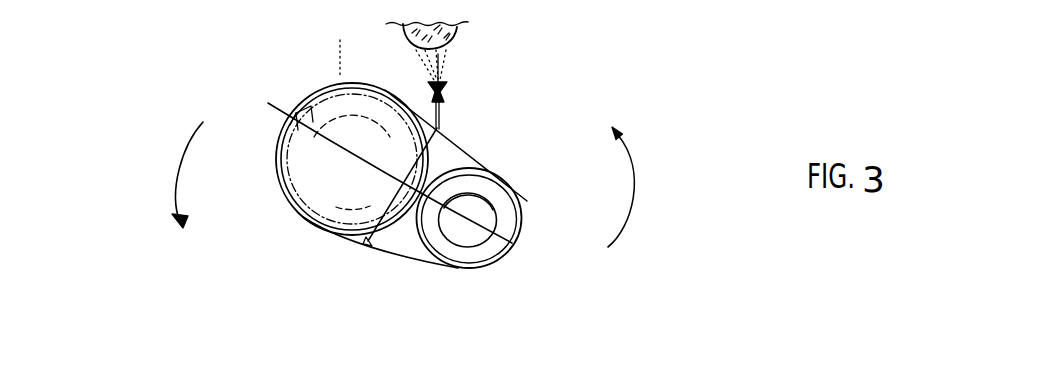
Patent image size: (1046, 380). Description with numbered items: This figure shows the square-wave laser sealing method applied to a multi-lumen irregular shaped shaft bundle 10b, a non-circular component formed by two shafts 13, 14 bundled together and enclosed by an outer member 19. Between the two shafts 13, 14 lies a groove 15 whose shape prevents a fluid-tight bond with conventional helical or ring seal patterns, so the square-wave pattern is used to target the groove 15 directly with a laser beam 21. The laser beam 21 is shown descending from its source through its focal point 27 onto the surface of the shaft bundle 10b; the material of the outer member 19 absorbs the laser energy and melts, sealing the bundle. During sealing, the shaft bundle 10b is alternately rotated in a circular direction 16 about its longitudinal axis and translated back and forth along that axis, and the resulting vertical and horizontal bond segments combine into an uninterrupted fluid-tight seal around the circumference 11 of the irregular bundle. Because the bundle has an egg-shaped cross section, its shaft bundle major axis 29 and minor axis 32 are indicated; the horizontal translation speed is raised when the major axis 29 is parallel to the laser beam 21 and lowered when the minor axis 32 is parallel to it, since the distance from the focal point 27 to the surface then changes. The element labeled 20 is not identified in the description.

The multi-lumen irregular shaped shaft bundle 10b is at (298, 235).
The circumference 11 is at (389, 50).
The shaft 13 is at (379, 168).
The shaft 14 is at (512, 216).
The groove 15 is at (470, 164).
The circular direction 16 is at (404, 184).
The outer member 19 is at (395, 257).
The liquid supply reservoir 20 is at (457, 31).
The laser beam 21 is at (445, 73).
The focal point of the laser beam 27 is at (450, 96).
The shaft bundle major axis 29 is at (311, 101).
The minor axis 32 is at (370, 244).